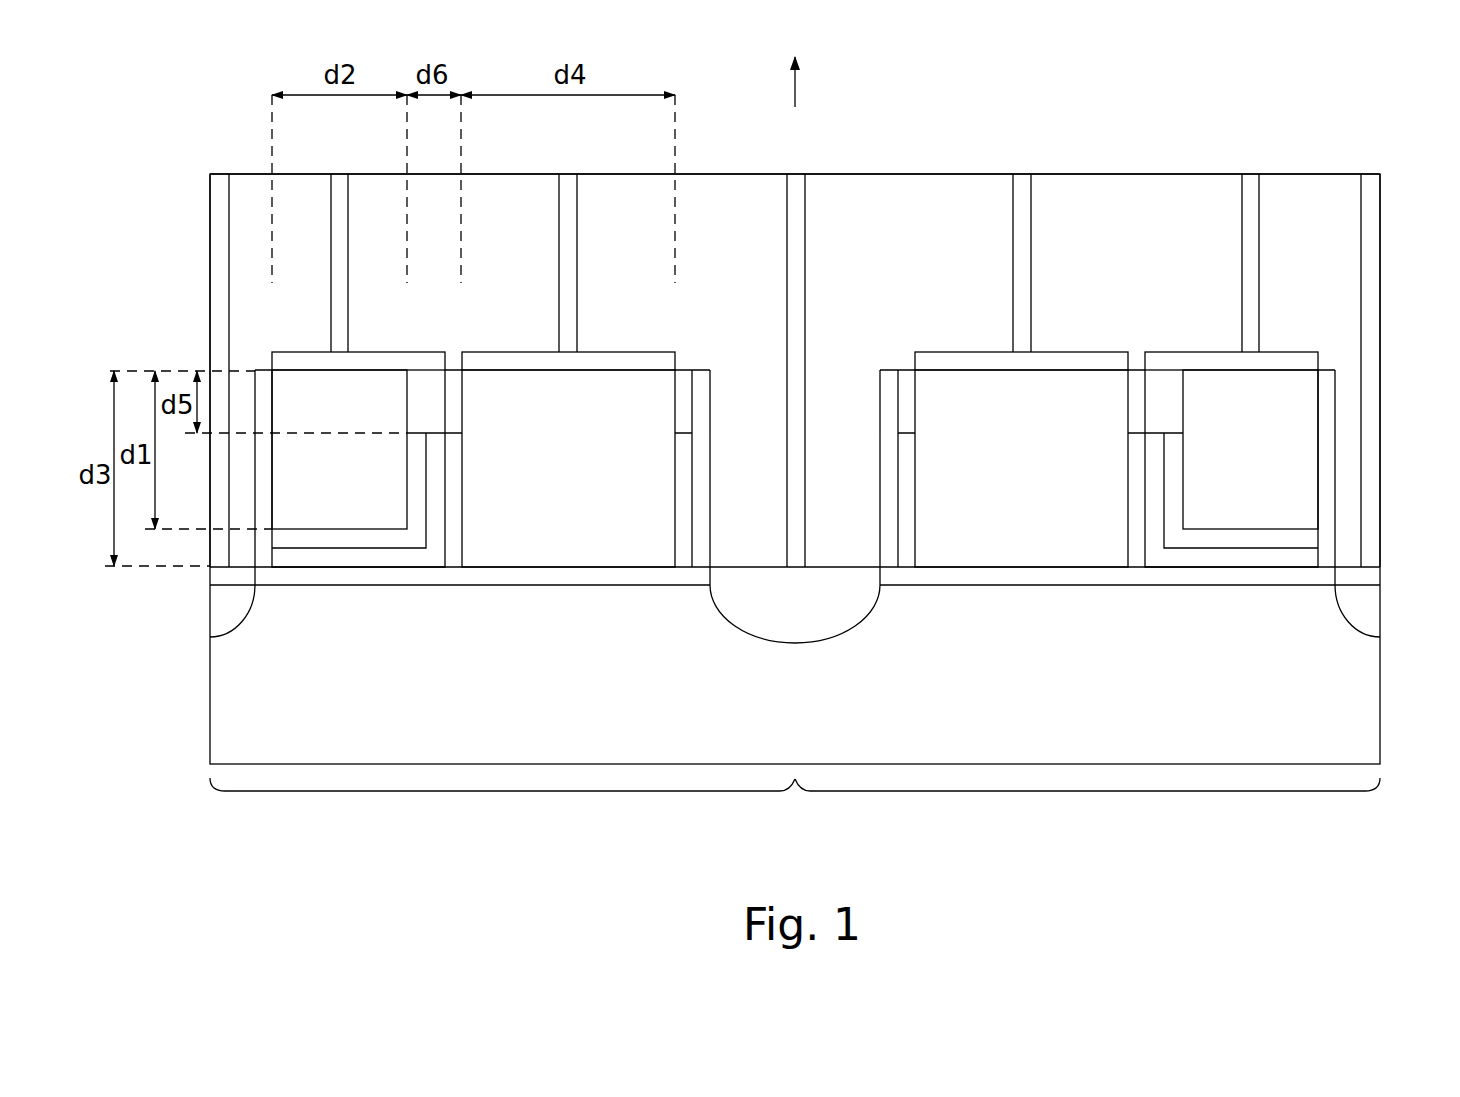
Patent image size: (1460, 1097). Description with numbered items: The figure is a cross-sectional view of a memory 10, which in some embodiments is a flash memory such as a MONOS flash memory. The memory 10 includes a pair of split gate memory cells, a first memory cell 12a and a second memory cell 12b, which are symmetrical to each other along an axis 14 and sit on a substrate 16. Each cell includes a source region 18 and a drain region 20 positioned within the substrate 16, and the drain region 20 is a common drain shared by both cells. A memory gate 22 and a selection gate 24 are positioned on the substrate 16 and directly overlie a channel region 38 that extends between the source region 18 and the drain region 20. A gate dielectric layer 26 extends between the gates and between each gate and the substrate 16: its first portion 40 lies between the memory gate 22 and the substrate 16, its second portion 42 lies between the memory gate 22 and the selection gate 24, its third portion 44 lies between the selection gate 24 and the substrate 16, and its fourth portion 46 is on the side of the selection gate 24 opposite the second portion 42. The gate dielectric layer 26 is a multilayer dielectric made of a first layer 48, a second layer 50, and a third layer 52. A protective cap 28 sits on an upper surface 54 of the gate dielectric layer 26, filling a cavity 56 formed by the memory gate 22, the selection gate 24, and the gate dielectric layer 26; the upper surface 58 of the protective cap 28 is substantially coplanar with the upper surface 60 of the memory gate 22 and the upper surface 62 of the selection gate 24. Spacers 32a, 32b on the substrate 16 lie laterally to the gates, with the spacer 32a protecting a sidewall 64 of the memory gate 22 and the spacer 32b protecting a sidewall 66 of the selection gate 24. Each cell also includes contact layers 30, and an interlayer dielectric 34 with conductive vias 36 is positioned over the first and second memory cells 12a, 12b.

The memory 10 is at (165, 108).
The first memory cell 12a is at (502, 808).
The second memory cell 12b is at (1087, 808).
The axis 14 is at (795, 807).
The substrate 16 is at (212, 680).
The source region 18 is at (1362, 628).
The drain region 20 is at (797, 632).
The memory gate 22 is at (1267, 385).
The selection gate 24 is at (1050, 385).
The gate dielectric layer 26 is at (1183, 428).
The protective cap 28 is at (1170, 373).
The contact layers 30 is at (1377, 575).
The spacer 32a is at (1332, 405).
The spacer 32b is at (878, 395).
The interlayer dielectric 34 is at (258, 182).
The conductive vias 36 is at (1374, 178).
The channel region 38 is at (502, 650).
The first portion 40 is at (345, 594).
The second portion 42 is at (470, 503).
The third portion 44 is at (568, 594).
The fourth portion 46 is at (672, 468).
The first layer 48 is at (1180, 447).
The second layer 50 is at (1268, 550).
The third layer 52 is at (1140, 575).
The upper surface 54 is at (683, 425).
The cavity 56 is at (464, 415).
The upper surface 58 is at (445, 369).
The upper surface 60 is at (285, 369).
The upper surface 62 is at (617, 369).
The sidewall 64 is at (270, 485).
The sidewall 66 is at (680, 488).